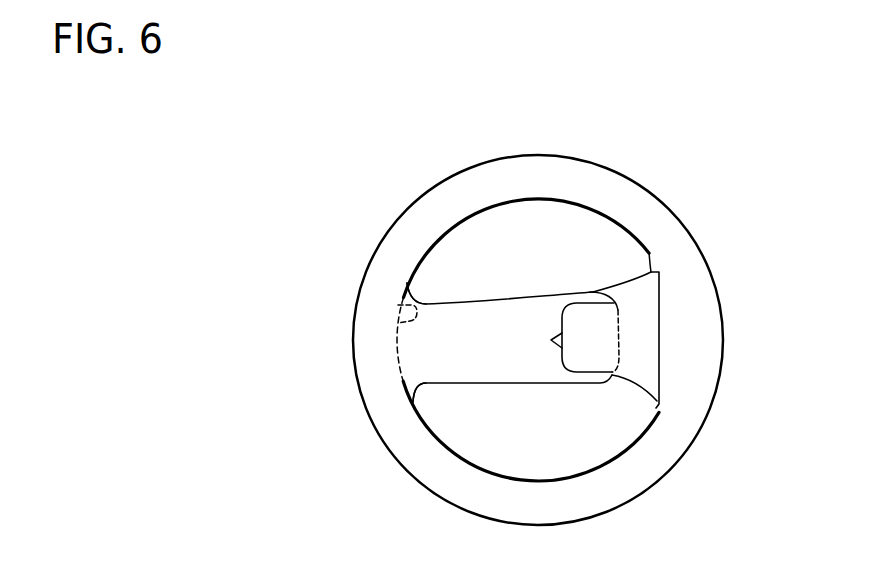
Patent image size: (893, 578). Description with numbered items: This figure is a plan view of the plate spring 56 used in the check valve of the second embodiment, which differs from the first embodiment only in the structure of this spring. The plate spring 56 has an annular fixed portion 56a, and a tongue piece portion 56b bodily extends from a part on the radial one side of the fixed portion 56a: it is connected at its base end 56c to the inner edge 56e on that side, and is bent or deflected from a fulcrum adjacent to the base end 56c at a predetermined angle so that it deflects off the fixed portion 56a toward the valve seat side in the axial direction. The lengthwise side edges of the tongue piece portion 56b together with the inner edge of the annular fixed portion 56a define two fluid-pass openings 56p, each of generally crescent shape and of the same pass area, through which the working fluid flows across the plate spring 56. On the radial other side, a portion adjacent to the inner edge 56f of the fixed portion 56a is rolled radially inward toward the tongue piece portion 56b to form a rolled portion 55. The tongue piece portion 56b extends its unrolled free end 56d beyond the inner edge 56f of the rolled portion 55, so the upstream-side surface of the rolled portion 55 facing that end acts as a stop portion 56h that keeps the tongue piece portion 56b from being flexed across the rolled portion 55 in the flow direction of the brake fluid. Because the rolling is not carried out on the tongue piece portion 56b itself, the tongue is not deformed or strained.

The plate spring 56 is at (366, 168).
The annular fixed portion 56a is at (648, 221).
The tongue piece portion 56b is at (503, 324).
The base end 56c is at (395, 338).
The unrolled end 56d is at (583, 378).
The inner edge 56e is at (397, 303).
The inner edge 56f is at (562, 327).
The stop portion 56h is at (640, 230).
The fluid-pass openings 56p is at (477, 255).
The rolled portion 55 is at (587, 318).